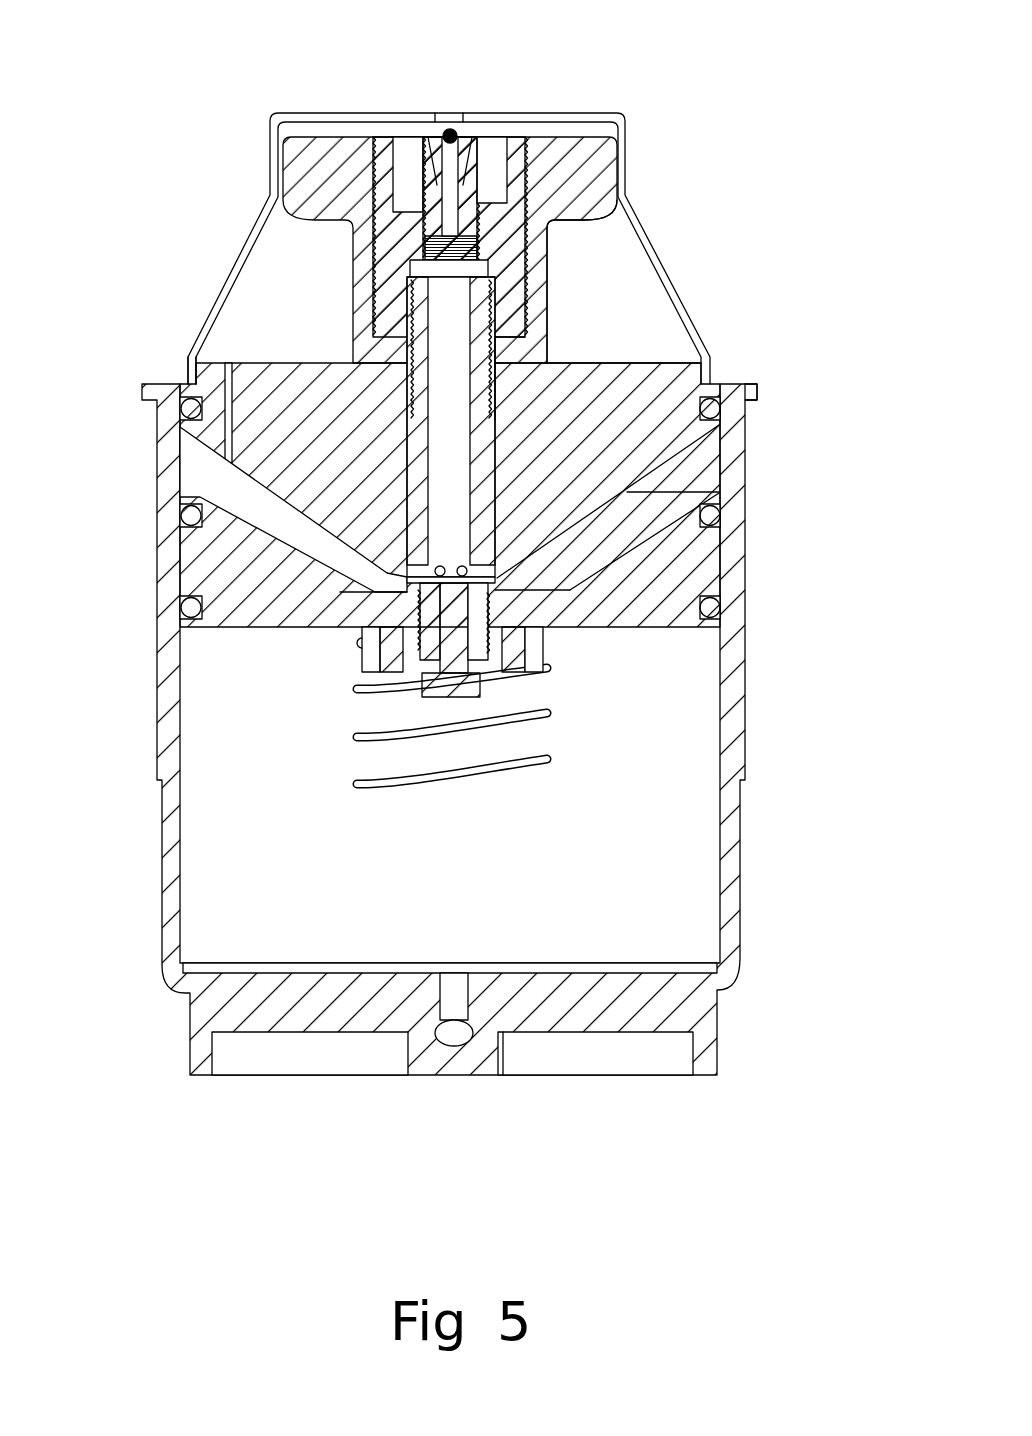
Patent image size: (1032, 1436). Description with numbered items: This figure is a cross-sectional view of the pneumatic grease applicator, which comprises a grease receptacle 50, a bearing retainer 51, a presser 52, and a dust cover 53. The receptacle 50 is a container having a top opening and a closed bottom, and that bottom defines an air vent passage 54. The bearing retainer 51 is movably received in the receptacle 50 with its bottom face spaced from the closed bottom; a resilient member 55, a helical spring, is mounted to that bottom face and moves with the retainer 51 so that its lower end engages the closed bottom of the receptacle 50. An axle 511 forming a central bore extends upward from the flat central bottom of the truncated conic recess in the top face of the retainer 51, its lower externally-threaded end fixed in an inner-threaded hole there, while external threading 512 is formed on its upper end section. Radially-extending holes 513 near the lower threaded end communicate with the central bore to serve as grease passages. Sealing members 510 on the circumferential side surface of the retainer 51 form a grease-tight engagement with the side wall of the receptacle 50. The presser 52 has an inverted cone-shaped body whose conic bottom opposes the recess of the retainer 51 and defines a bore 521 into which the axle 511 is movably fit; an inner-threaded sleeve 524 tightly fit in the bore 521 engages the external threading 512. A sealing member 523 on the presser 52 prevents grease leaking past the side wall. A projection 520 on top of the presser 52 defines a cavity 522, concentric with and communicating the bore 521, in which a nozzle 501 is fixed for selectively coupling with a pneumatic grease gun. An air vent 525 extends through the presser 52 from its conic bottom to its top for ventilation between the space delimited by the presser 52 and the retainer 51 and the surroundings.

The grease receptacle 50 is at (742, 856).
The bearing retainer 51 is at (705, 570).
The presser 52 is at (267, 360).
The dust cover 53 is at (268, 116).
The air vent passage 54 is at (462, 1040).
The resilient member 55 is at (552, 757).
The nozzle 501 is at (497, 150).
The sealing member 510 is at (722, 510).
The axle 511 is at (494, 400).
The external threading 512 is at (508, 345).
The radially-extending holes 513 is at (610, 387).
The projection 520 is at (623, 128).
The bore 521 is at (520, 405).
The cavity 522 is at (405, 193).
The sealing member 523 is at (757, 390).
The inner-threaded sleeve 524 is at (553, 235).
The air vent 525 is at (192, 360).